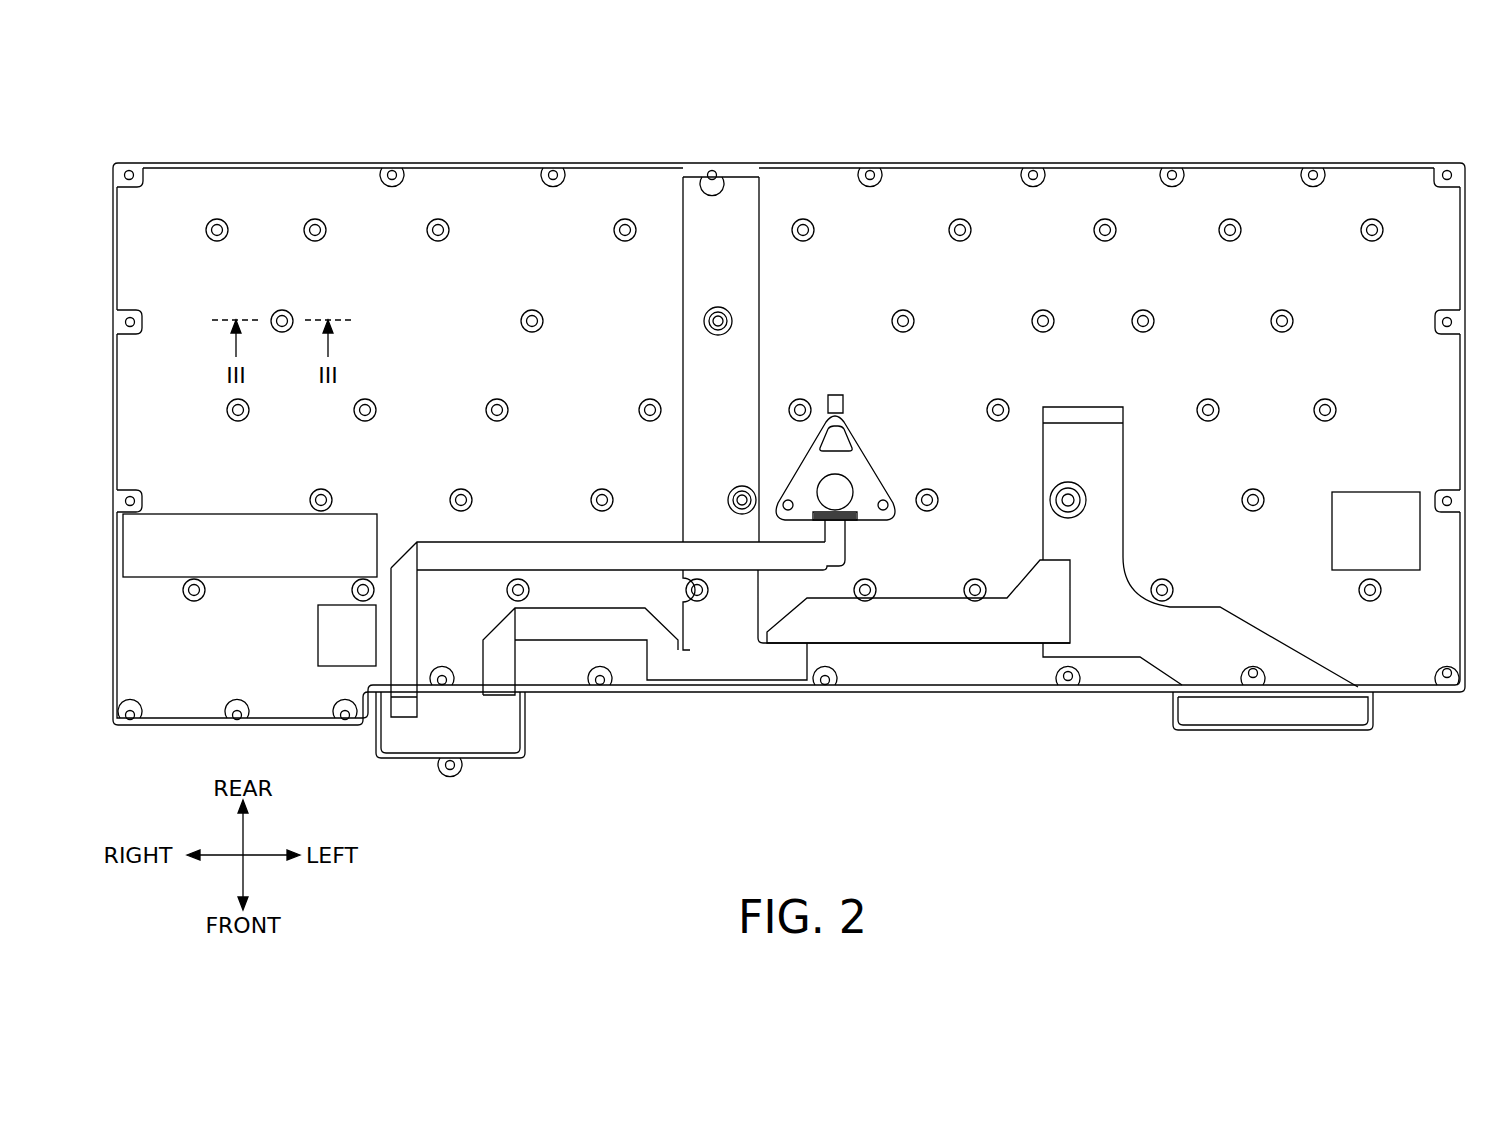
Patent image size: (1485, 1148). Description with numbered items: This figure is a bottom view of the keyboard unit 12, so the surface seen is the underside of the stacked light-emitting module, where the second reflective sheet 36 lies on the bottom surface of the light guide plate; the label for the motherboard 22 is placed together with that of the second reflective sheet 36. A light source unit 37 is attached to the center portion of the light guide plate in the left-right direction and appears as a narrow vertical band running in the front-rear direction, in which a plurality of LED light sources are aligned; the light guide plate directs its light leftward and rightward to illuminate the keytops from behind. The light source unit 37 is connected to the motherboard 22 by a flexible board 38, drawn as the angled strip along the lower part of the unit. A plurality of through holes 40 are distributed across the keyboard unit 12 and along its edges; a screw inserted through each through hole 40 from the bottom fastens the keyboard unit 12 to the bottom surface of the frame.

The keyboard unit 12 is at (119, 84).
The motherboard 22 is at (662, 190).
The second reflective sheet 36 is at (789, 460).
The light source unit 37 is at (700, 362).
The flexible board 38 is at (1112, 648).
The through hole 40 is at (129, 170).